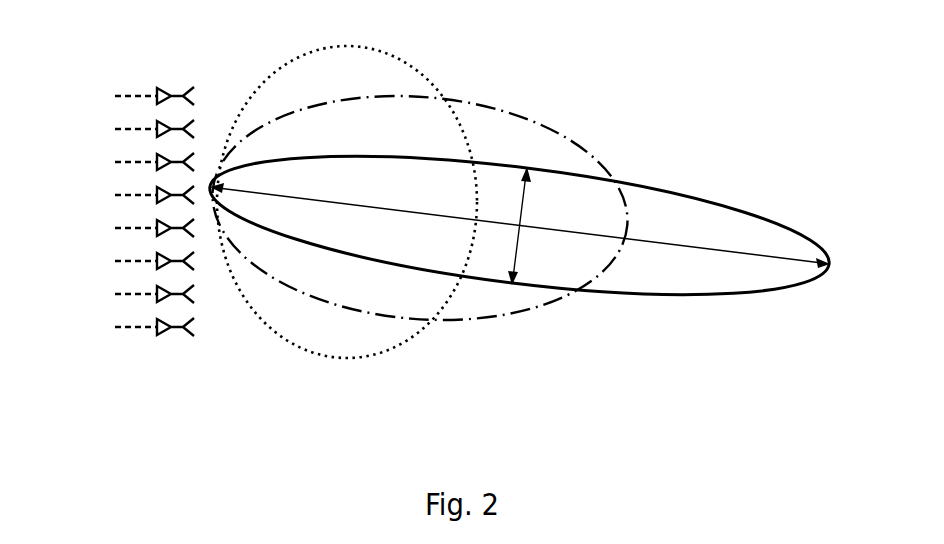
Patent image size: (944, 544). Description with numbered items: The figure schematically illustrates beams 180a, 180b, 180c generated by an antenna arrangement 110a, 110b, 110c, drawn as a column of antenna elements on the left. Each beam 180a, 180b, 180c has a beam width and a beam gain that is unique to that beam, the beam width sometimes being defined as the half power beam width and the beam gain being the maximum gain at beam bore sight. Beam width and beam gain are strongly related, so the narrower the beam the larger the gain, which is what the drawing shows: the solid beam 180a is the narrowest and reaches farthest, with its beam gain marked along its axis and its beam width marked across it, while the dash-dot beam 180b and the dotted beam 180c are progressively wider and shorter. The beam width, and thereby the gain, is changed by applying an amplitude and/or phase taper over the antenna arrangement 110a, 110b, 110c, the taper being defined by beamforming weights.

The antenna arrangement 110a is at (140, 349).
The antenna arrangement 110b is at (114, 280).
The antenna arrangement 110c is at (116, 280).
The beam 180a is at (672, 192).
The beam 180b is at (505, 115).
The beam 180c is at (408, 68).